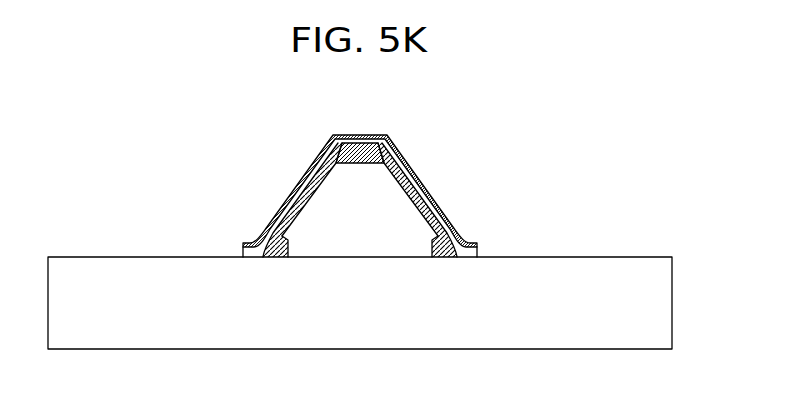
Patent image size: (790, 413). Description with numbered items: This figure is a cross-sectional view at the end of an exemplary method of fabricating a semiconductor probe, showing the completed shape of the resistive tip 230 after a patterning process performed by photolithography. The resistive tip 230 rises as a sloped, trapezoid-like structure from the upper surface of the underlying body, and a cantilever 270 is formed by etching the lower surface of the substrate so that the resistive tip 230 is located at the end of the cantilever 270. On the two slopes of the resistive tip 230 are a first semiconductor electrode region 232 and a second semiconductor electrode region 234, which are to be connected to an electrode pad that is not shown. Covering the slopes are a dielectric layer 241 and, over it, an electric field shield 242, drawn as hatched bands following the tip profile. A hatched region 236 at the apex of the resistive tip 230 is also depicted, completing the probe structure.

The resistive tip 230 is at (266, 184).
The first semiconductor electrode region 232 is at (287, 257).
The second semiconductor electrode region 234 is at (432, 257).
The upper layer portion 236 is at (358, 163).
The dielectric layer 241 is at (433, 210).
The electric field shield 242 is at (412, 175).
The cantilever 270 is at (662, 301).